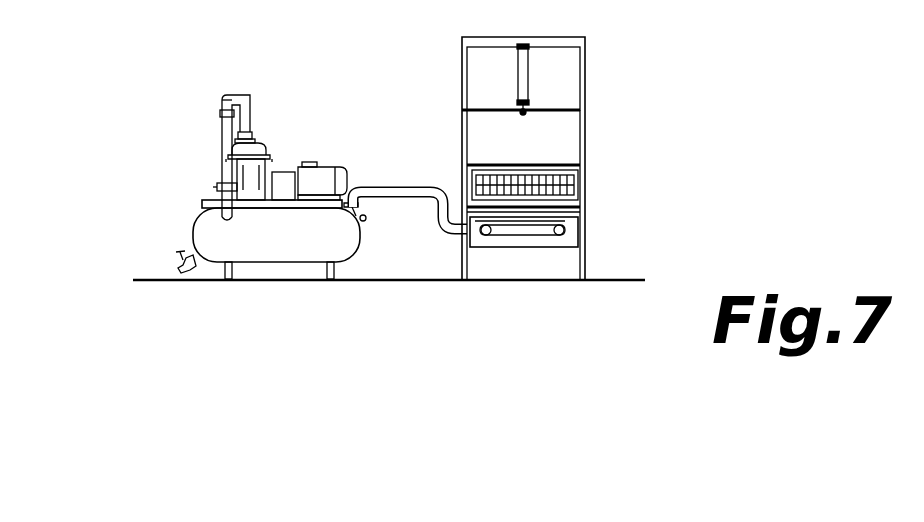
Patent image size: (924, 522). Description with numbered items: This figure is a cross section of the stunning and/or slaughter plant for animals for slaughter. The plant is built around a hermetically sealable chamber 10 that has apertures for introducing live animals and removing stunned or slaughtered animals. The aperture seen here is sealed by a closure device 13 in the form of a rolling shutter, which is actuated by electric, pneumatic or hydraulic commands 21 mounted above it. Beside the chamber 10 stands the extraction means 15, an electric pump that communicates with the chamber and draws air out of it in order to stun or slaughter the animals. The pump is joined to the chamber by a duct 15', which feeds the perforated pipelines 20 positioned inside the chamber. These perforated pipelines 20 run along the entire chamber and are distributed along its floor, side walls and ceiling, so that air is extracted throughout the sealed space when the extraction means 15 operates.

The hermetically sealable chamber 10 is at (602, 208).
The closure device 13 is at (565, 137).
The extraction means 15 is at (229, 187).
The duct 15' is at (410, 156).
The perforated pipelines 20 is at (518, 238).
The commands 21 is at (528, 82).